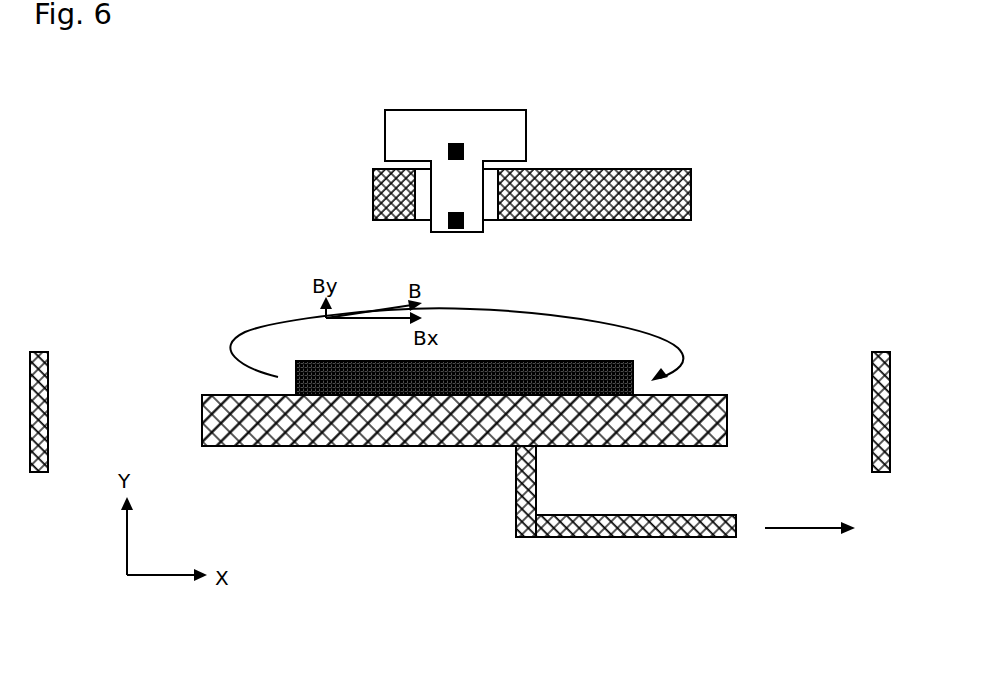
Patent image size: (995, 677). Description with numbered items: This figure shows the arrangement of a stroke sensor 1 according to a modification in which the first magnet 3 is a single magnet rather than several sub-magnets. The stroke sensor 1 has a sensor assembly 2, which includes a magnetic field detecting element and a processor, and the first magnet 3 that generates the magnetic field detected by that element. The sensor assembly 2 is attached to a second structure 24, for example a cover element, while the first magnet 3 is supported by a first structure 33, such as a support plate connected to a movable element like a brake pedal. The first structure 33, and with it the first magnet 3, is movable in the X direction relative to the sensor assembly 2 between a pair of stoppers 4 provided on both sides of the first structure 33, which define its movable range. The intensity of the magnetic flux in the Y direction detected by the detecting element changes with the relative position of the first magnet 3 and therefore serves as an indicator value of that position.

The stroke sensor 1 is at (478, 160).
The sensor assembly 2 is at (423, 155).
The second structure 24 is at (612, 169).
The first magnet 3 is at (437, 348).
The first structure 33 is at (717, 395).
The stoppers 4 is at (43, 352).